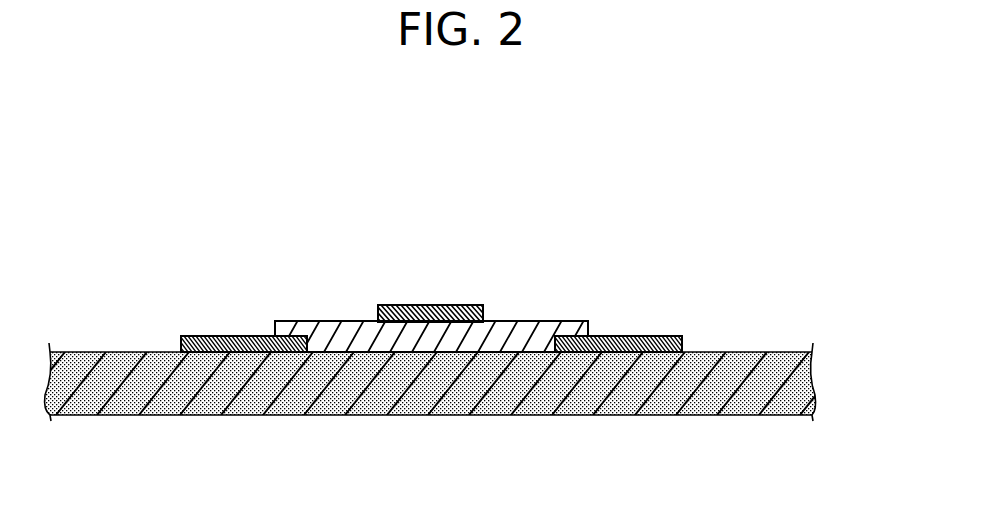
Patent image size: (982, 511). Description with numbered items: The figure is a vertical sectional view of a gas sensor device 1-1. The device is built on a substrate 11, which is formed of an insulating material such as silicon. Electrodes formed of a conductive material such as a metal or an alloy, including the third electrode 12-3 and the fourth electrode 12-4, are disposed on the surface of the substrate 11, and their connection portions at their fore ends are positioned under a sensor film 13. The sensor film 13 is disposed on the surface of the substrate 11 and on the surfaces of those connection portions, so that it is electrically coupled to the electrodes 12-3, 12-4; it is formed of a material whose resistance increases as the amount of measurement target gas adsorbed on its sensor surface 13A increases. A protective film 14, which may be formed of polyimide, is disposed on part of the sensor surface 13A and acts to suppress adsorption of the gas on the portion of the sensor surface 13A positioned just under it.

The gas sensor device 1-1 is at (735, 218).
The substrate 11 is at (760, 352).
The third electrode 12-3 is at (678, 339).
The fourth electrode 12-4 is at (183, 342).
The sensor film 13 is at (570, 332).
The sensor surface 13A is at (536, 322).
The protective film 14 is at (442, 306).